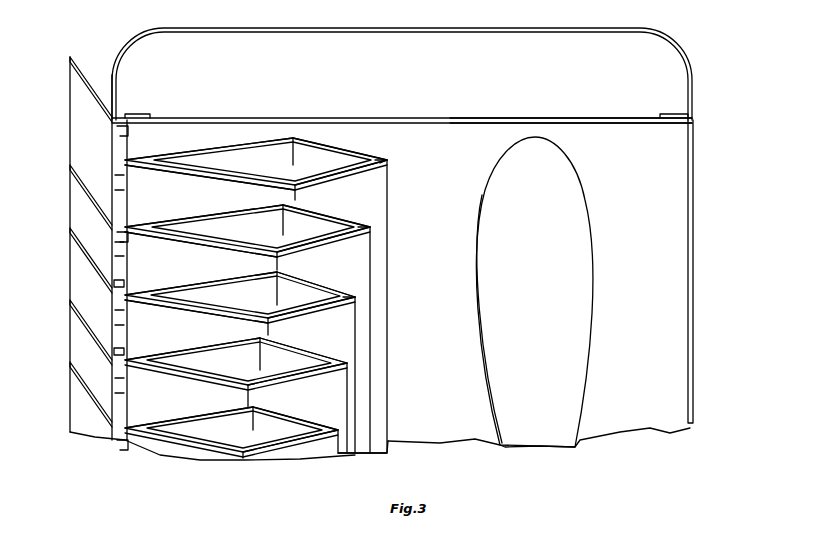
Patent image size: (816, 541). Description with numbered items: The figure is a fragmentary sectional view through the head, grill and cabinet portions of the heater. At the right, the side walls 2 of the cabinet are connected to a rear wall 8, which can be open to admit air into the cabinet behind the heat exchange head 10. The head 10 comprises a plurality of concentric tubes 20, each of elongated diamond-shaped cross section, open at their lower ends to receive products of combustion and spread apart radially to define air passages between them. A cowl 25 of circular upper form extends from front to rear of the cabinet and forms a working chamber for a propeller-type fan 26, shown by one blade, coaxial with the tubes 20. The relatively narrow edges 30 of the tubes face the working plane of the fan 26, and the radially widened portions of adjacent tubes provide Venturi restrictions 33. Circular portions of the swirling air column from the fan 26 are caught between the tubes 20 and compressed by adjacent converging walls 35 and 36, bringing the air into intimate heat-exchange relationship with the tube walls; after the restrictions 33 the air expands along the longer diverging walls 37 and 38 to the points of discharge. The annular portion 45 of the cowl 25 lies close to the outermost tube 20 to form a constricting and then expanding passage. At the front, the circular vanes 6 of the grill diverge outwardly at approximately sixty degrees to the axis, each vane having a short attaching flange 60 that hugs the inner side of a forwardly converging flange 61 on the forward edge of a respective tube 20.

The side walls 2 is at (413, 31).
The concentric vanes 6 is at (78, 78).
The rear wall 8 is at (694, 124).
The heat exchange head 10 is at (359, 454).
The concentric tubes 20 is at (355, 172).
The cowl 25 is at (524, 118).
The propeller-type fan 26 is at (572, 218).
The narrow edges 30 is at (390, 160).
The Venturi restrictions 33 is at (292, 193).
The adjacent tube wall 35 is at (340, 224).
The adjacent tube wall 36 is at (310, 176).
The diverging tube wall 37 is at (204, 218).
The diverging tube wall 38 is at (197, 175).
The annular portion of the cowl 45 is at (240, 118).
The attaching flange 60 is at (129, 132).
The flange 61 is at (125, 284).